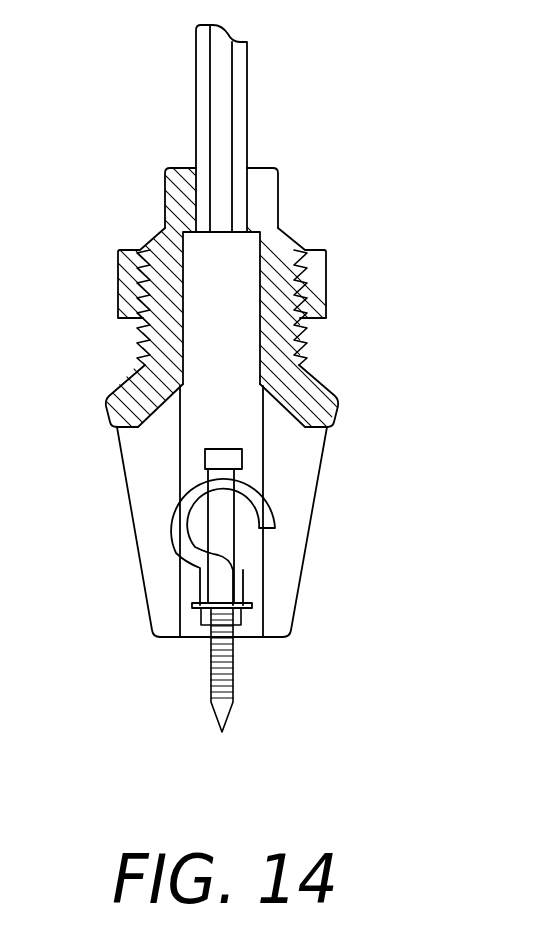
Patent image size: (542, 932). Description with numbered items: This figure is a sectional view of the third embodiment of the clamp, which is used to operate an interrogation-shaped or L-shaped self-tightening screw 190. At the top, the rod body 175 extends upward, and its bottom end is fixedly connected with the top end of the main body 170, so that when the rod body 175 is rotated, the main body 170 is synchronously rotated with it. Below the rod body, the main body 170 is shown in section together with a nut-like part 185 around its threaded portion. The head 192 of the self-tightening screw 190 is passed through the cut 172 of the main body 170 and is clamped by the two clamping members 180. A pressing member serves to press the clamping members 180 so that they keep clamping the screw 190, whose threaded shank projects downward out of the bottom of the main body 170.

The rod body 175 is at (245, 58).
The nut 185 is at (320, 278).
The main body 170 is at (347, 380).
The cut 172 is at (287, 592).
The head 192 is at (177, 508).
The clamping members 180 is at (230, 537).
The self-tightening screw 190 is at (227, 575).